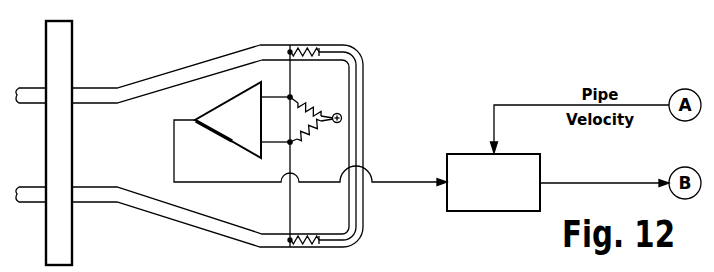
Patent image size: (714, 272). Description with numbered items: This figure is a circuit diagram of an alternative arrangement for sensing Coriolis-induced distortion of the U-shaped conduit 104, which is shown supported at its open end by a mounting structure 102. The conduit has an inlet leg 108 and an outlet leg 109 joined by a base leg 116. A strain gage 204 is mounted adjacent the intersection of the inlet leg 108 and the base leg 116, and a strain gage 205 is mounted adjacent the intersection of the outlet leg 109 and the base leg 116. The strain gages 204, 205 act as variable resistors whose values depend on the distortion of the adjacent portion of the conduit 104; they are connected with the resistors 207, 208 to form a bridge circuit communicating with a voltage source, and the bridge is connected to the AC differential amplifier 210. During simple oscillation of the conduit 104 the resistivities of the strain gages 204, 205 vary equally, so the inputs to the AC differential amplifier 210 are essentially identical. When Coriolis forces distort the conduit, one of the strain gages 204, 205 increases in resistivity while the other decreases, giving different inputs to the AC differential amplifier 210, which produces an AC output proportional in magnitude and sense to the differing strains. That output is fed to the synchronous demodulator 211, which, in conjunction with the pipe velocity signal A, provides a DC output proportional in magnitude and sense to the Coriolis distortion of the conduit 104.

The mounting plate 102 is at (73, 159).
The U-shaped conduit 104 is at (197, 65).
The inlet leg 108 is at (207, 228).
The outlet leg 109 is at (275, 48).
The base leg 116 is at (364, 97).
The strain gage 204 is at (292, 236).
The strain gage 205 is at (312, 48).
The resistor 207 is at (297, 143).
The resistor 208 is at (300, 100).
The AC differential amplifier 210 is at (206, 104).
The synchronous demodulator 211 is at (542, 168).